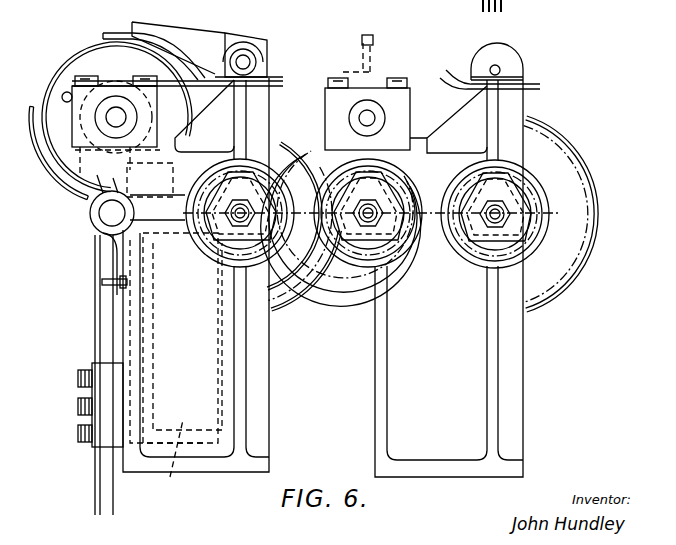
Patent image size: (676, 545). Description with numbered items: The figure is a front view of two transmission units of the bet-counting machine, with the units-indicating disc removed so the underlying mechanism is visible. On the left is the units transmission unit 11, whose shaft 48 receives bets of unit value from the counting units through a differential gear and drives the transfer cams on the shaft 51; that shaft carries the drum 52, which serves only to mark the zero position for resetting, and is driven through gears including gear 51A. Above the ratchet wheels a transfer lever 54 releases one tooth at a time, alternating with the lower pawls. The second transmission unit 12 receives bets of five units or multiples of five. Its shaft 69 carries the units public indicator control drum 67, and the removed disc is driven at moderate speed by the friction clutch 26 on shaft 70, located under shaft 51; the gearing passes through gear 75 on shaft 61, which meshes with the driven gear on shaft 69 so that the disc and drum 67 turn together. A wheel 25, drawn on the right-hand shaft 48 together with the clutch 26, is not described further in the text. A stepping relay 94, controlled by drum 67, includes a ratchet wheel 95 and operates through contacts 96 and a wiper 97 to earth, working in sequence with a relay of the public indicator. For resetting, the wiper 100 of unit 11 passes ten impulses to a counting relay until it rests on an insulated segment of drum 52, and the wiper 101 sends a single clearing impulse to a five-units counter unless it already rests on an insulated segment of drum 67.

The units transmission unit 11 is at (517, 353).
The transmission unit 12 is at (265, 360).
The wheel rim 25 is at (455, 261).
The friction clutch 26 is at (528, 222).
The shaft 48 is at (499, 214).
The shaft 51 is at (362, 117).
The gear 51A is at (553, 134).
The drum 52 is at (341, 40).
The transfer lever 54 is at (190, 33).
The shaft 61 is at (233, 217).
The units public indicator control drum 67 is at (58, 71).
The shaft 69 is at (140, 117).
The shaft 70 is at (366, 218).
The gear 75 is at (295, 305).
The stepping relay 94 is at (137, 345).
The ratchet wheel 95 is at (110, 85).
The contacts 96 is at (95, 316).
The wiper 97 is at (46, 158).
The wiper 100 is at (424, 52).
The wiper 101 is at (113, 33).